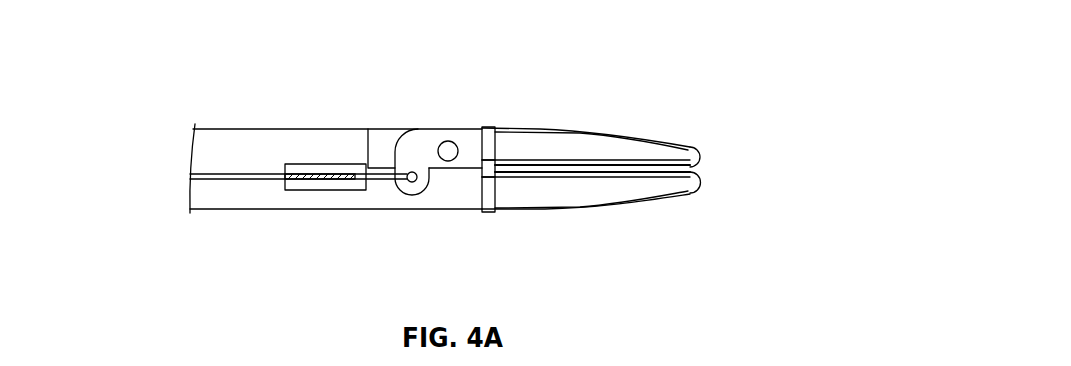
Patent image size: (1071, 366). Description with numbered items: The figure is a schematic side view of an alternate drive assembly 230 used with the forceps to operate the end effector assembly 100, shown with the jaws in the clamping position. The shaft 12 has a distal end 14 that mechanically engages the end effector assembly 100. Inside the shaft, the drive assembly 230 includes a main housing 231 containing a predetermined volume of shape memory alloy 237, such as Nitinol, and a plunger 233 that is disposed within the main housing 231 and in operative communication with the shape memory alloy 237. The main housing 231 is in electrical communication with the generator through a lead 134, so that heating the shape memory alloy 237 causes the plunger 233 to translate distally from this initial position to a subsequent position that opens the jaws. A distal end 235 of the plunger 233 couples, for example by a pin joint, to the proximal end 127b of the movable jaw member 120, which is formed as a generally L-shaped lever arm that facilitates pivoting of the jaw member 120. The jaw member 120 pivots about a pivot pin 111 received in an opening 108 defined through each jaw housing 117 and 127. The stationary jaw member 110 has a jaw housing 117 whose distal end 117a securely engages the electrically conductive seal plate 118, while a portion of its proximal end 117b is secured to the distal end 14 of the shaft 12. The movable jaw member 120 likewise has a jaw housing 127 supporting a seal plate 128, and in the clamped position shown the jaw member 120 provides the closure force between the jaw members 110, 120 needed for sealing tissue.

The end effector assembly 100 is at (677, 45).
The shaft 12 is at (208, 128).
The distal end 14 is at (273, 128).
The lead 134 is at (205, 173).
The drive assembly 230 is at (323, 150).
The main housing 231 is at (345, 192).
The shape memory alloy 237 is at (302, 182).
The plunger 233 is at (368, 129).
The distal end 235 is at (410, 183).
The proximal end 127b is at (432, 128).
The opening 108 is at (461, 178).
The pivot pin 111 is at (455, 144).
The jaw member 110 is at (702, 196).
The jaw housing 127 is at (612, 137).
The jaw member 120 is at (702, 145).
The seal plate 128 is at (704, 170).
The seal plate 118 is at (705, 176).
The jaw housing 117 is at (627, 208).
The distal end 117a is at (537, 212).
The proximal end 117b is at (450, 210).